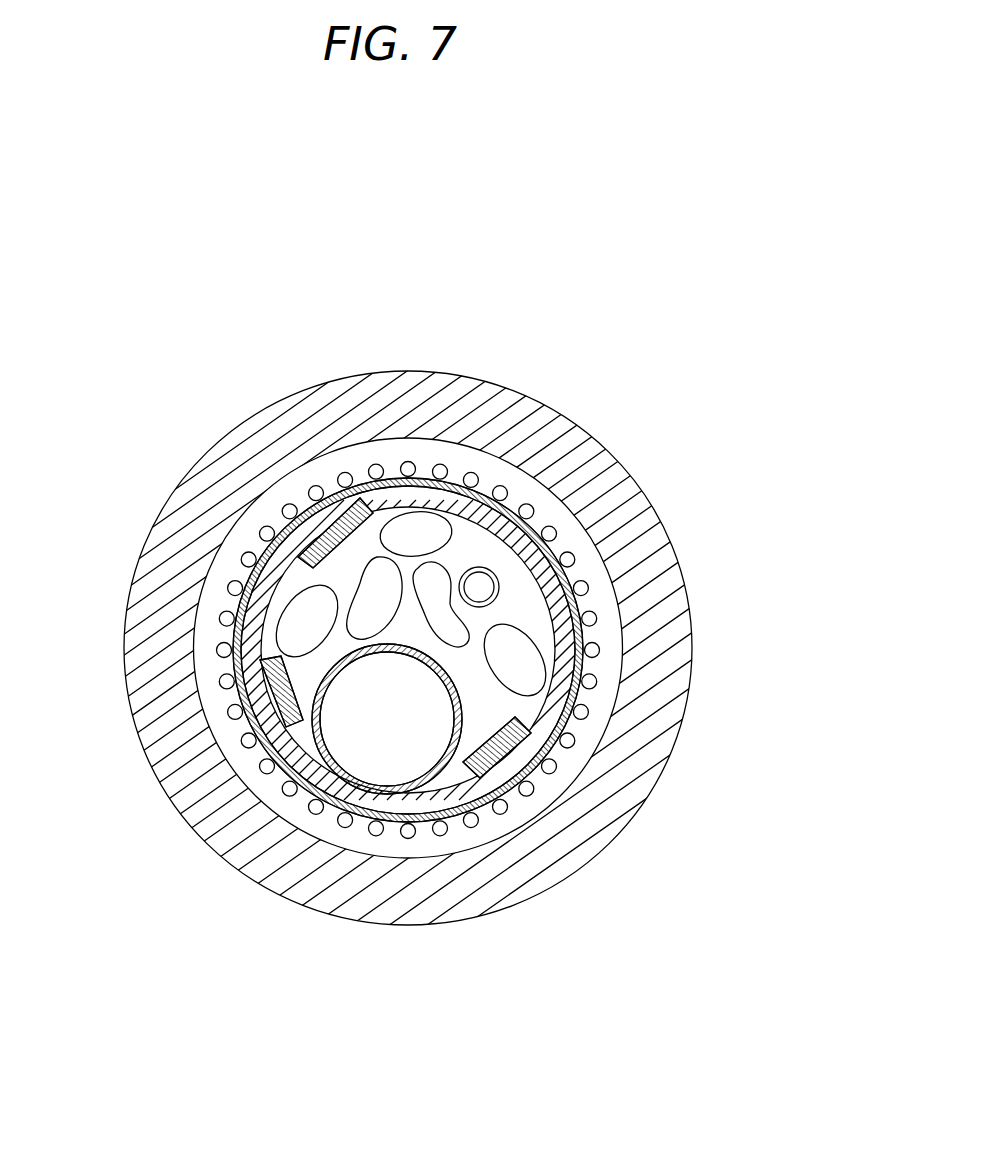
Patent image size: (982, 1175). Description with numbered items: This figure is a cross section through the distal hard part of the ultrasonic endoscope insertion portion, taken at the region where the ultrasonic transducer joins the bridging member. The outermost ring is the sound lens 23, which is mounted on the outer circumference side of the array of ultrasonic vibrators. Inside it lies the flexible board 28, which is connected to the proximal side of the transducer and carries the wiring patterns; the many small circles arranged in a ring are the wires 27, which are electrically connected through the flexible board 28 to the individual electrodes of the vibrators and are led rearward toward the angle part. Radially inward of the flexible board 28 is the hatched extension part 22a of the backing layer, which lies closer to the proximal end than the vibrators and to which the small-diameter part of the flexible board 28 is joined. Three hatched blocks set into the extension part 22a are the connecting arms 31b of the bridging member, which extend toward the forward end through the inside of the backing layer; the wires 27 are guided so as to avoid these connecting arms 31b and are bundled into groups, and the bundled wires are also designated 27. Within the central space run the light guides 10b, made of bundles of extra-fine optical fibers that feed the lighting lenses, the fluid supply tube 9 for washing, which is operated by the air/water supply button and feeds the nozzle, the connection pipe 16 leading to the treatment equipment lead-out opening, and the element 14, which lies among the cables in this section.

The fluid supply tube 9 is at (479, 560).
The light guide 10b is at (305, 620).
The signal cable 14 is at (418, 530).
The connection pipe 16 is at (292, 778).
The extension part 22a is at (610, 633).
The sound lens 23 is at (618, 527).
The wires 27 is at (435, 598).
The flexible board 28 is at (540, 812).
The connecting arm 31b is at (335, 510).